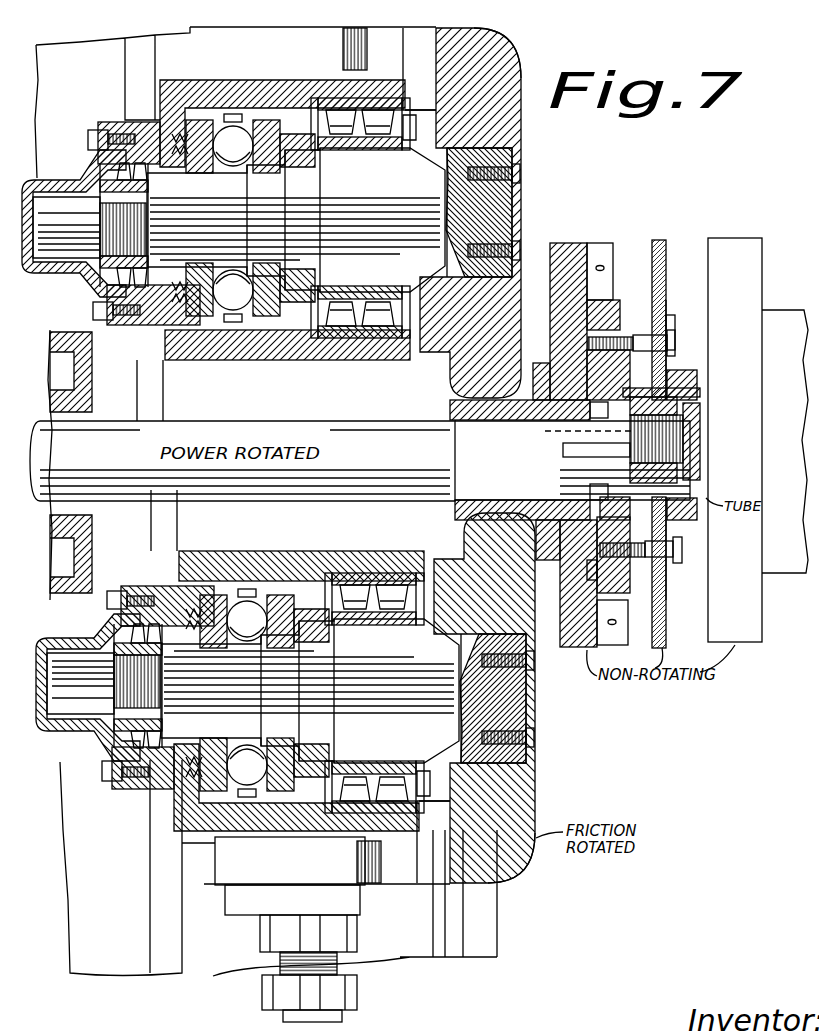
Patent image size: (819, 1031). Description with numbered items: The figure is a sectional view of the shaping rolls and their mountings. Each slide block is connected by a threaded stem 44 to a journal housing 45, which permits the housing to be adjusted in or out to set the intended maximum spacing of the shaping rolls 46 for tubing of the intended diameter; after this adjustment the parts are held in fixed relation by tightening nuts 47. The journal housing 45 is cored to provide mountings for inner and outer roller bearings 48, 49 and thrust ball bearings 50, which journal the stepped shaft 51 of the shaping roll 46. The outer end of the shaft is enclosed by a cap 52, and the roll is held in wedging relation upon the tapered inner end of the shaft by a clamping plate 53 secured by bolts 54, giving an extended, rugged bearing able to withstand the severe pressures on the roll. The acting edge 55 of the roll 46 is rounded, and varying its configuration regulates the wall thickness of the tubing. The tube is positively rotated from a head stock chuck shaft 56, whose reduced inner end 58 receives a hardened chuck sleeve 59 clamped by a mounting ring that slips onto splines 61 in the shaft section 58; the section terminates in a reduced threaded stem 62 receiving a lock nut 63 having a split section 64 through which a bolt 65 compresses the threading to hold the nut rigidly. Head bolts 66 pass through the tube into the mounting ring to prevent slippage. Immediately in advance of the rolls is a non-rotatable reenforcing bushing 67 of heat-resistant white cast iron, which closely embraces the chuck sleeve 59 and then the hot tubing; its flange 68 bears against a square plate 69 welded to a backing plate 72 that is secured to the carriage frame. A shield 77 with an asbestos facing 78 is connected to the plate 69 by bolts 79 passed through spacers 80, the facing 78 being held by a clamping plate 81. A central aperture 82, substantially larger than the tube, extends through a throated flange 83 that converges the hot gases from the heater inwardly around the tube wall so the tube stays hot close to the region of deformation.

The threaded stem 44 is at (282, 962).
The journal housing 45 is at (172, 80).
The shaping roll 46 is at (522, 124).
The nuts 47 is at (264, 1002).
The inner roller bearing 48 is at (362, 136).
The outer roller bearing 49 is at (138, 188).
The thrust ball bearings 50 is at (233, 166).
The stepped shaft 51 is at (362, 226).
The cap 52 is at (60, 179).
The clamping plate 53 is at (513, 204).
The bolts 54 is at (521, 174).
The acting edge 55 is at (504, 46).
The head stock chuck shaft 56 is at (312, 498).
The reduced inner end 58 is at (572, 460).
The hardened chuck sleeve 59 is at (460, 420).
The splines 61 is at (565, 446).
The reduced threaded stem 62 is at (701, 441).
The lock nut 63 is at (681, 478).
The split section 64 is at (700, 394).
The bolt 65 is at (700, 408).
The head bolts 66 is at (598, 419).
The non-rotatable reenforcing bushing 67 is at (546, 372).
The flange 68 is at (640, 376).
The square plate 69 is at (606, 310).
The backing plate 72 is at (570, 246).
The shield 77 is at (651, 436).
The asbestos facing 78 is at (660, 297).
The bolts 79 is at (676, 342).
The spacers 80 is at (616, 340).
The clamping plate 81 is at (675, 326).
The aperture 82 is at (675, 518).
The throated flange 83 is at (700, 505).